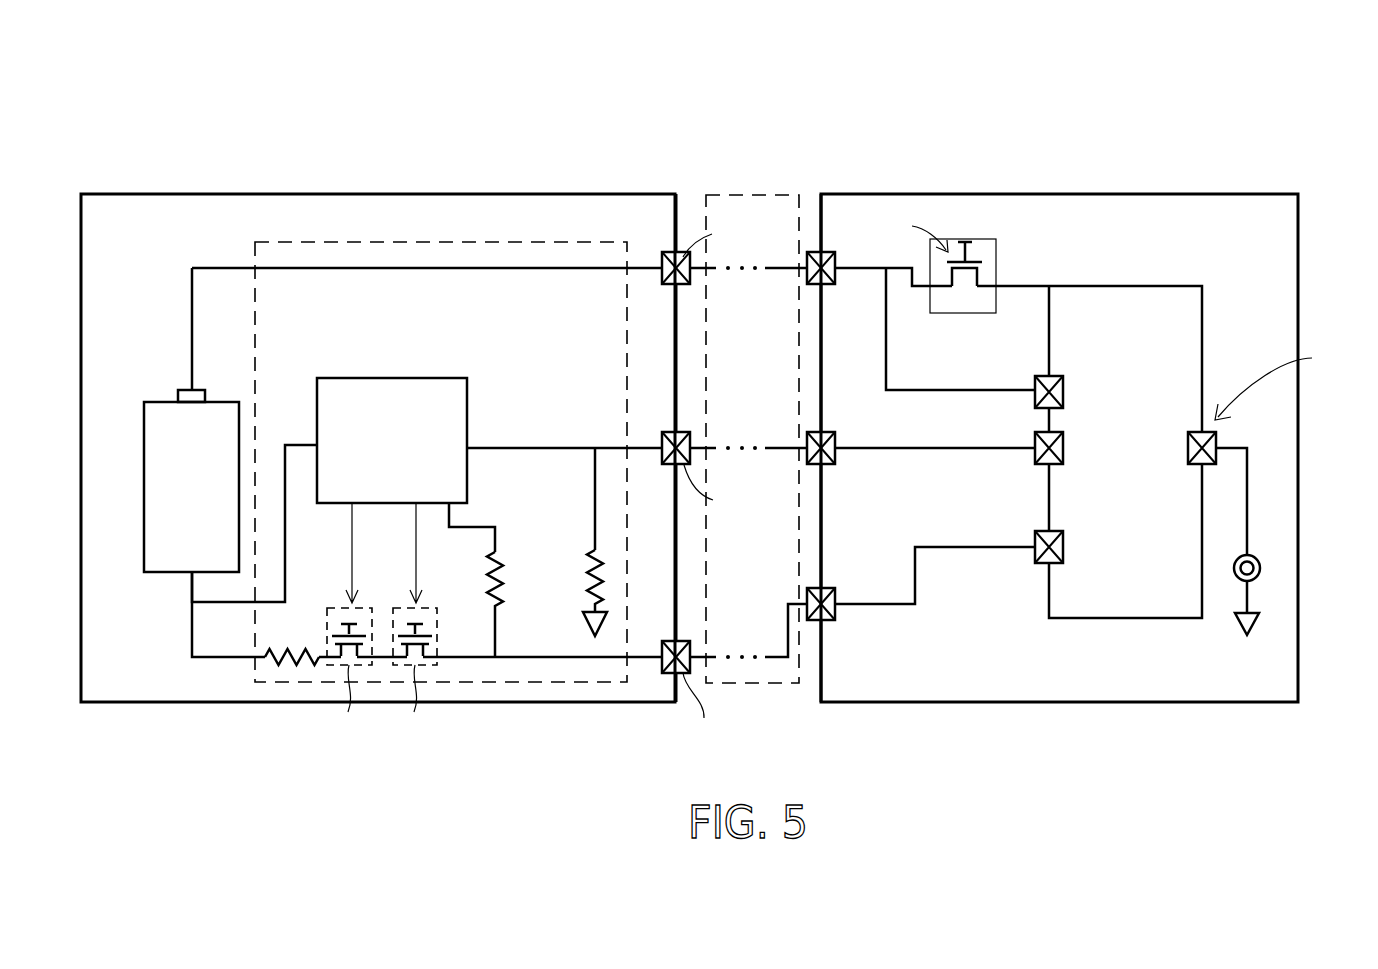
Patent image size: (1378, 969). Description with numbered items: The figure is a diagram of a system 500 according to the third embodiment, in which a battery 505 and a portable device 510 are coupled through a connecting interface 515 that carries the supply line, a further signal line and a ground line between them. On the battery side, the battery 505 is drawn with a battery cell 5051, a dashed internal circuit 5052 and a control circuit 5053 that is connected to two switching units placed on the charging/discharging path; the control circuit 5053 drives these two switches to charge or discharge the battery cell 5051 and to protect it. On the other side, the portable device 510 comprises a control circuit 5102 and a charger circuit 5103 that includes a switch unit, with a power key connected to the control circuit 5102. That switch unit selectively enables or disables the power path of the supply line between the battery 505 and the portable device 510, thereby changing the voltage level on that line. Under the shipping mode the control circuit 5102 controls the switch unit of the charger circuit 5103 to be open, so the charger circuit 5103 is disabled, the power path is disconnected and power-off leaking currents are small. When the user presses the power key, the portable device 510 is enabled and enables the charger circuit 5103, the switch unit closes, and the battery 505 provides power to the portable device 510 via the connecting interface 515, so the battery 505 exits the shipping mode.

The system 500 is at (1172, 90).
The battery 505 is at (395, 193).
The portable device 510 is at (1217, 193).
The connecting interface 515 is at (749, 195).
The battery cell 5051 is at (172, 400).
The protection circuit 5052 is at (296, 242).
The control circuit of battery 5053 is at (392, 378).
The control circuit 5102 is at (1137, 286).
The charger circuit 5103 is at (997, 268).